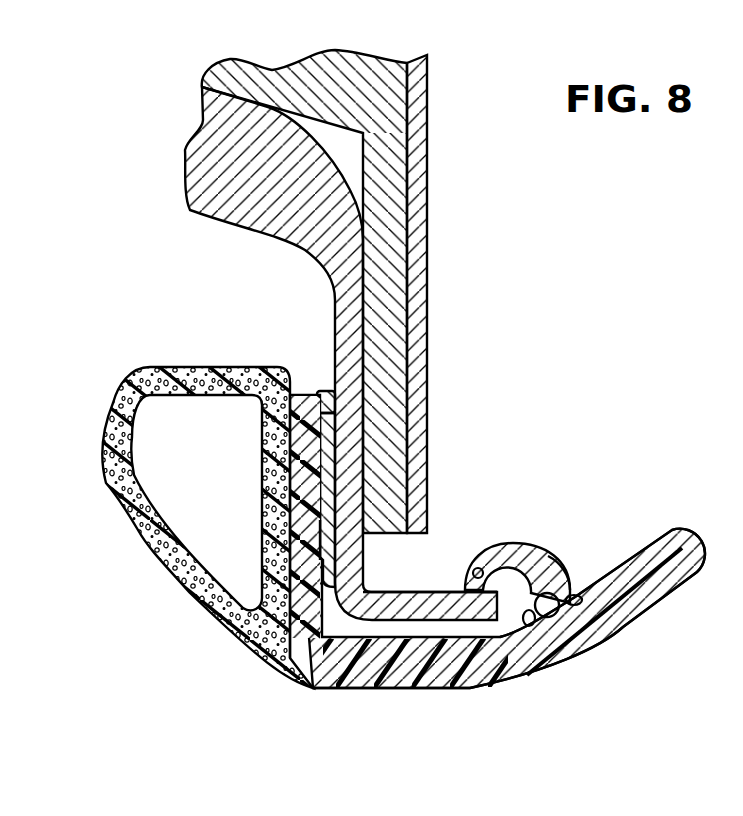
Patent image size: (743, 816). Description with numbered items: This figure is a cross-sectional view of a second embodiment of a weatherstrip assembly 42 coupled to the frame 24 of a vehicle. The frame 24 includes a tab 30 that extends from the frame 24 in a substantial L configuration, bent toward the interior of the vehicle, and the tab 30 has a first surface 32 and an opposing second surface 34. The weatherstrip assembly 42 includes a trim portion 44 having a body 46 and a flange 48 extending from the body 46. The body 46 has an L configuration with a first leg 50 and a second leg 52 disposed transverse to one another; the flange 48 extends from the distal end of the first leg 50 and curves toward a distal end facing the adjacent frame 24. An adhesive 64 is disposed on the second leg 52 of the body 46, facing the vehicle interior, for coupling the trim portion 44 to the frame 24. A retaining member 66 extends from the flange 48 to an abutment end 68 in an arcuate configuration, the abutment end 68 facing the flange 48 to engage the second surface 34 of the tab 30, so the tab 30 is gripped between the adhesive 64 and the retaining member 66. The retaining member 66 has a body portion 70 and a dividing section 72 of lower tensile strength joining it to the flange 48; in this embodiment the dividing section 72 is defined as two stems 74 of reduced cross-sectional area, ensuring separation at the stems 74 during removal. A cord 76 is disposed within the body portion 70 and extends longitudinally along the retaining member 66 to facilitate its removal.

The frame 24 is at (176, 127).
The tab 30 is at (350, 388).
The first surface 32 is at (312, 398).
The second surface 34 is at (412, 590).
The weatherstrip assembly 42 is at (508, 737).
The trim portion 44 is at (291, 695).
The body 46 is at (282, 520).
The flange 48 is at (650, 580).
The first leg 50 is at (412, 660).
The second leg 52 is at (307, 478).
The adhesive 64 is at (303, 548).
The retaining member 66 is at (515, 543).
The abutment end 68 is at (478, 598).
The body portion 70 is at (538, 557).
The dividing section 72 is at (569, 583).
The stem 74 is at (580, 606).
The cord 76 is at (483, 550).